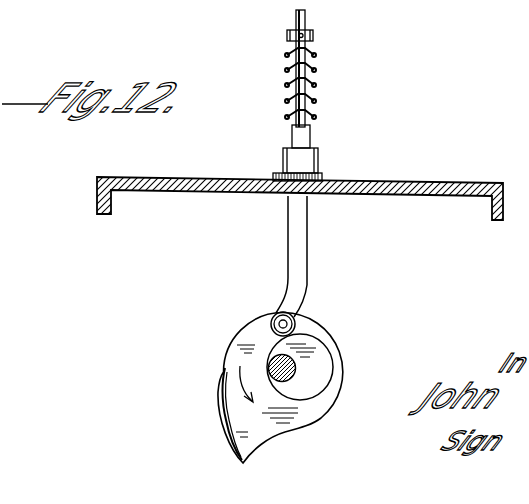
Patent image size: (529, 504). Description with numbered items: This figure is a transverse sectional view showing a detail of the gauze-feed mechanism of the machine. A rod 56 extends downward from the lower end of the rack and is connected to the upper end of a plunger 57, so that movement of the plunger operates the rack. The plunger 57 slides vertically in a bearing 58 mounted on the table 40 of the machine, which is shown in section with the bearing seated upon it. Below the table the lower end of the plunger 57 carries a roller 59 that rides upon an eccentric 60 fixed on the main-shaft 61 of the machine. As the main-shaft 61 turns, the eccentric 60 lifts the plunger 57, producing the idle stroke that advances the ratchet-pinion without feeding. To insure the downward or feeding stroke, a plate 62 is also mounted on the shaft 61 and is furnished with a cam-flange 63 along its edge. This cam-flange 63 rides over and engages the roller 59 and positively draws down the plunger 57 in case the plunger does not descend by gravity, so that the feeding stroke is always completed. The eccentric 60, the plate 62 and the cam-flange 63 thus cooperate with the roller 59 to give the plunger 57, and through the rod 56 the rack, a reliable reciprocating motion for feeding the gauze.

The table 40 is at (467, 183).
The rod 56 is at (304, 21).
The plunger 57 is at (299, 230).
The bearing 58 is at (317, 160).
The roller 59 is at (278, 315).
The eccentric 60 is at (326, 360).
The main-shaft 61 is at (296, 378).
The plate 62 is at (309, 418).
The cam-flange 63 is at (220, 427).